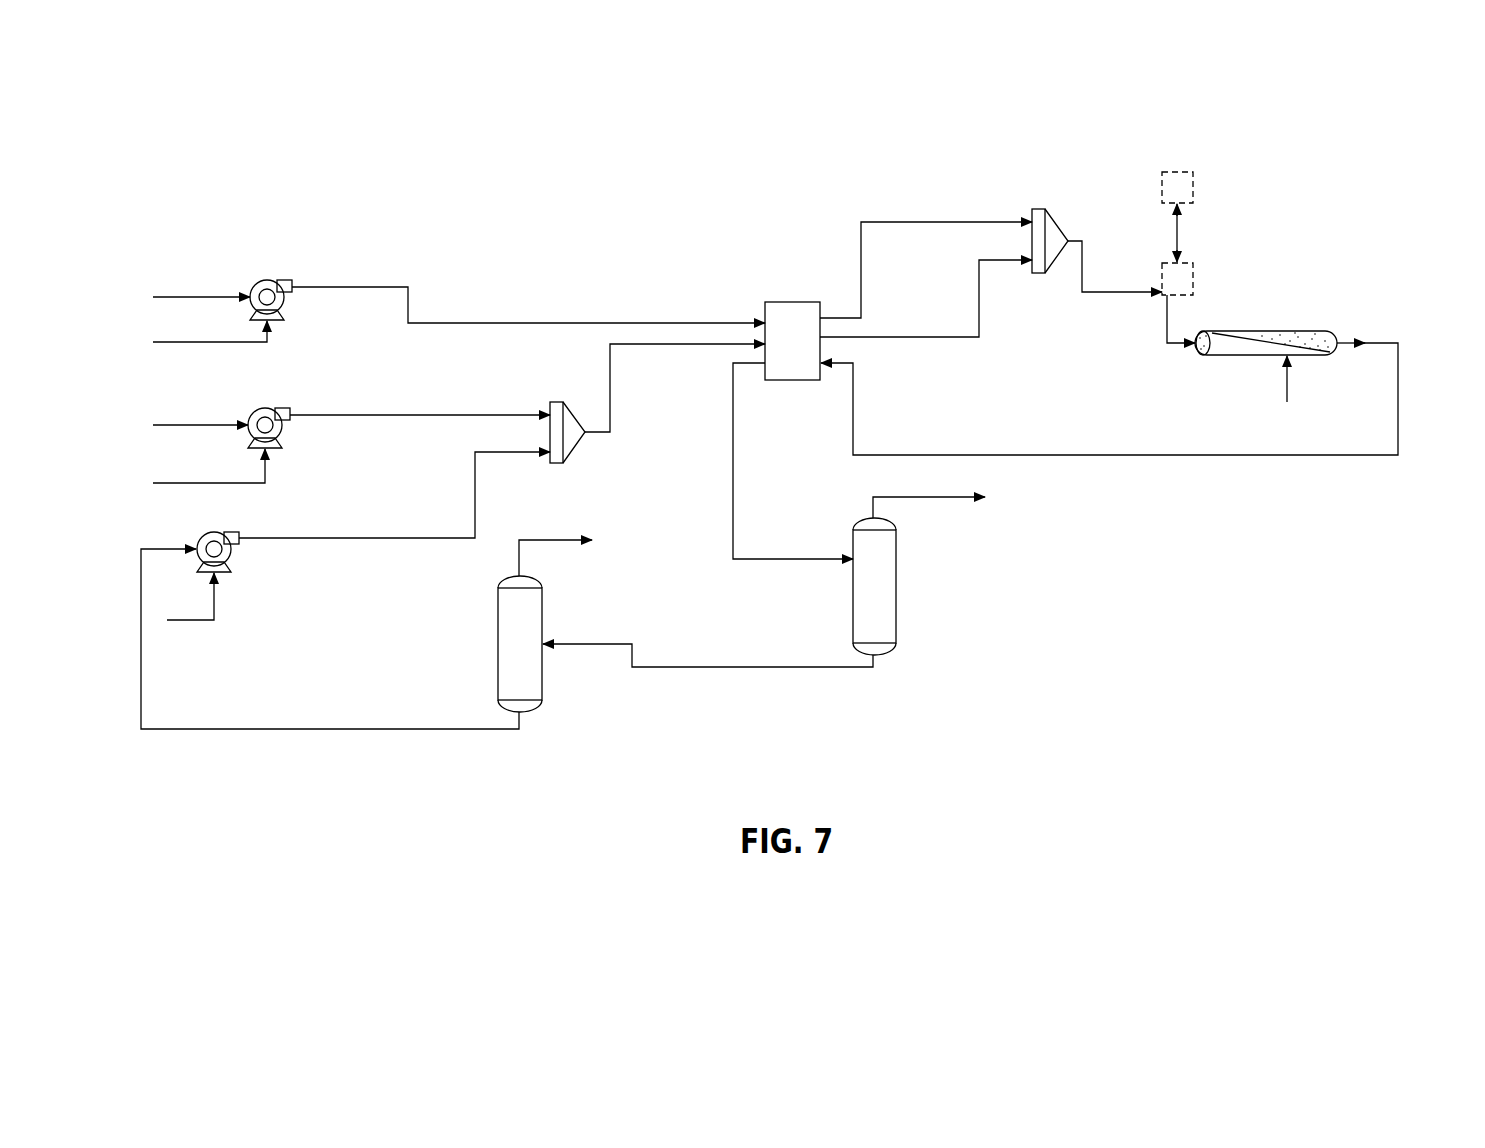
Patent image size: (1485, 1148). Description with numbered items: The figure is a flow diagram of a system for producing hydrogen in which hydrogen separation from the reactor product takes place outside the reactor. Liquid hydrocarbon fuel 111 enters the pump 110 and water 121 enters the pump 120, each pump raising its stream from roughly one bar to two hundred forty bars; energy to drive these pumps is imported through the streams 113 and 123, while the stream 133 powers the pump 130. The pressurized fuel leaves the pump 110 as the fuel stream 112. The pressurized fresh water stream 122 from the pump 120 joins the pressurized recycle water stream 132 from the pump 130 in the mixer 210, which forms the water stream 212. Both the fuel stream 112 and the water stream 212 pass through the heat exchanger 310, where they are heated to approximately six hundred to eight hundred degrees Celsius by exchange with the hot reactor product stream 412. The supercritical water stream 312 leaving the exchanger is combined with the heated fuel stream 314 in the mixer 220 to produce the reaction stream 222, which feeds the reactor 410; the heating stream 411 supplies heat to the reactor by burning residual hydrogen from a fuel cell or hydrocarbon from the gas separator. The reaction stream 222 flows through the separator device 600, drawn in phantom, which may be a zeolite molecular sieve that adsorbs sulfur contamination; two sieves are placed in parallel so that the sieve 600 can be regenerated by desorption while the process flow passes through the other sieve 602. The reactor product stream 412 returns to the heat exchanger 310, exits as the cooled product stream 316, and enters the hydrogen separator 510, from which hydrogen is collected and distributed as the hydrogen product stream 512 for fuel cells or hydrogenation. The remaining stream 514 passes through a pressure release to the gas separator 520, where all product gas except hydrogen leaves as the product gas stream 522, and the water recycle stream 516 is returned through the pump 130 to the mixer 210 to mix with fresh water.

The pump 110 is at (283, 300).
The liquid hydrocarbon fuel 111 is at (202, 293).
The fuel stream 112 is at (548, 322).
The energy stream 113 is at (208, 340).
The pump 120 is at (281, 428).
The water 121 is at (202, 423).
The pressurized water stream 122 is at (438, 413).
The energy stream 123 is at (208, 481).
The pump 130 is at (230, 553).
The pressurized recycle water stream 132 is at (414, 535).
The energy stream 133 is at (185, 620).
The mixer 210 is at (577, 448).
The water stream 212 is at (705, 347).
The mixer 220 is at (1038, 273).
The reaction stream 222 is at (1120, 292).
The heat exchanger 310 is at (793, 380).
The supercritical water stream 312 is at (948, 336).
The fuel stream 314 is at (945, 220).
The cooled product stream 316 is at (815, 558).
The reactor 410 is at (1250, 355).
The heating stream 411 is at (1287, 385).
The reactor product stream 412 is at (1378, 343).
The hydrogen separator 510 is at (896, 608).
The hydrogen product stream 512 is at (930, 495).
The remaining stream 514 is at (752, 667).
The water recycle stream 516 is at (328, 728).
The gas separator 520 is at (542, 680).
The product gas stream 522 is at (562, 538).
The separator device 600 is at (1196, 278).
The sieve 602 is at (1196, 185).